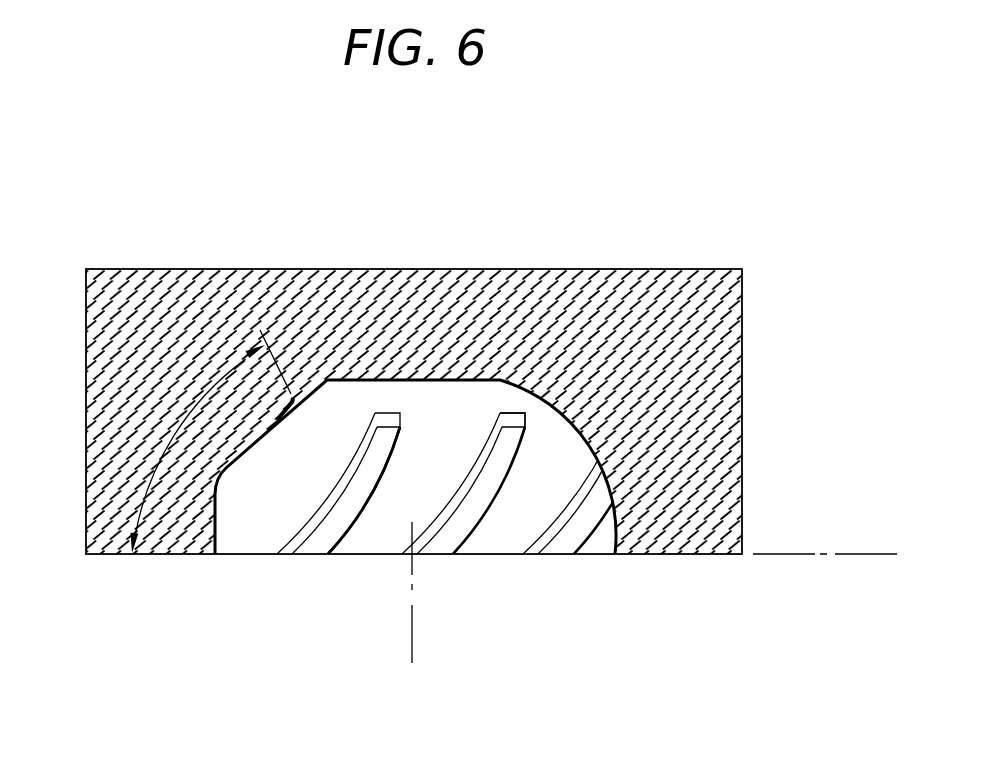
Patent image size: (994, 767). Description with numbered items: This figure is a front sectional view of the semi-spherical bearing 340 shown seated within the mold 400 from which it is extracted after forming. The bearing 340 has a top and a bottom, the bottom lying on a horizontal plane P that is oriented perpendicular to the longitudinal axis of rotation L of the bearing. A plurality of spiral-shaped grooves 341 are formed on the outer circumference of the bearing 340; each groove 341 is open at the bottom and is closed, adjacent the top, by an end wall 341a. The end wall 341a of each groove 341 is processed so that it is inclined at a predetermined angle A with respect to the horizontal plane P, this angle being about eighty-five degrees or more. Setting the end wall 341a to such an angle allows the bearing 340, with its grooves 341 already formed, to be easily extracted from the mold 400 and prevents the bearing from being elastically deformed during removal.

The mold 400 is at (173, 533).
The semi-spherical bearing 340 is at (275, 540).
The groove 341 is at (332, 533).
The end wall 341a is at (327, 380).
The predetermined angle A is at (178, 432).
The horizontal plane P is at (862, 526).
The longitudinal axis of rotation L is at (444, 651).